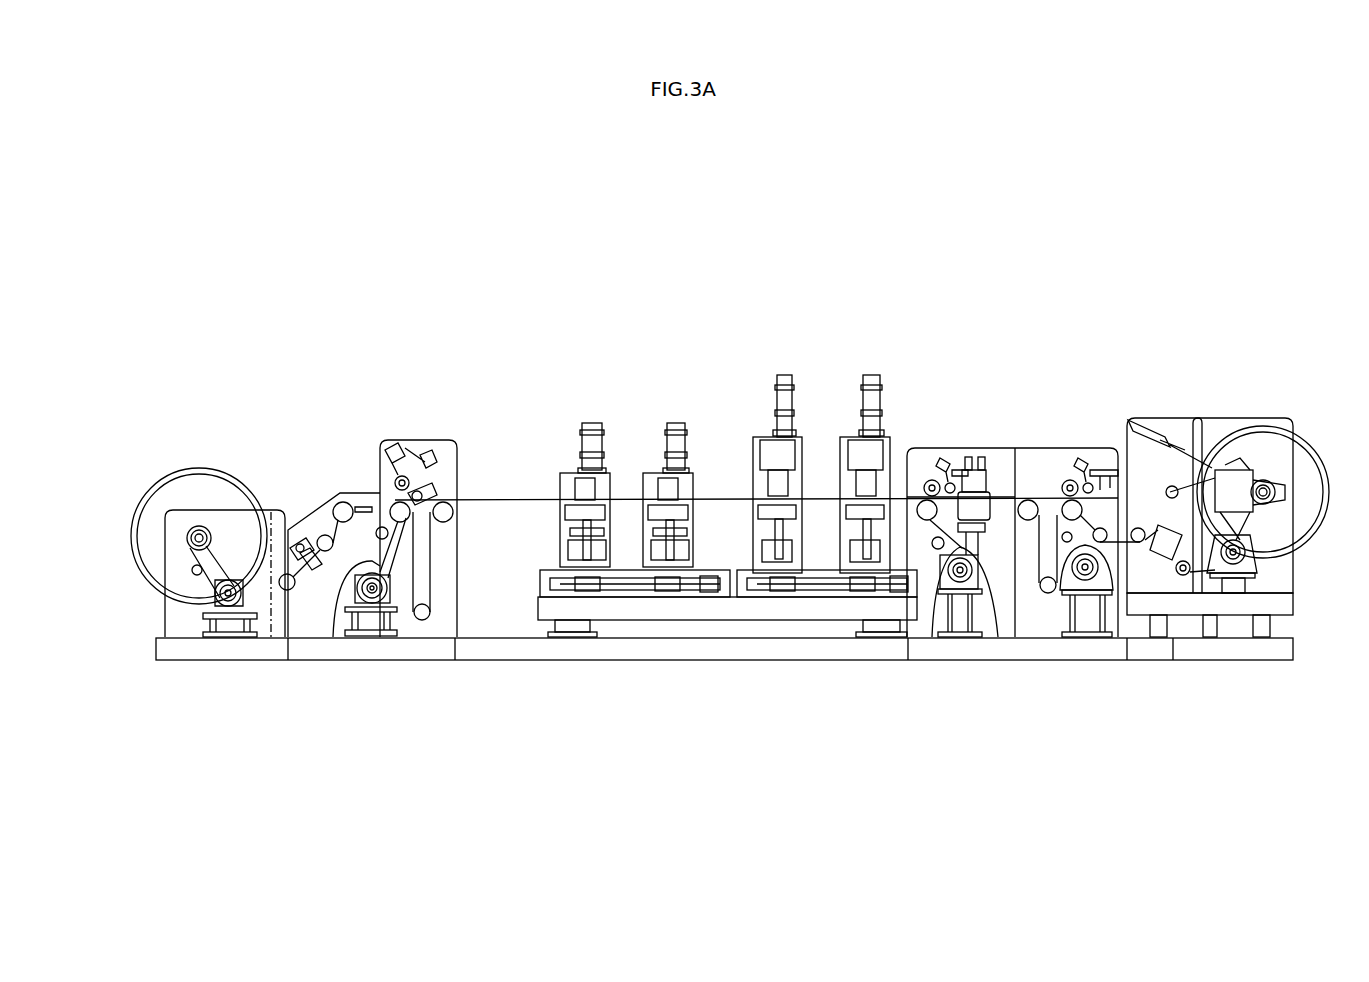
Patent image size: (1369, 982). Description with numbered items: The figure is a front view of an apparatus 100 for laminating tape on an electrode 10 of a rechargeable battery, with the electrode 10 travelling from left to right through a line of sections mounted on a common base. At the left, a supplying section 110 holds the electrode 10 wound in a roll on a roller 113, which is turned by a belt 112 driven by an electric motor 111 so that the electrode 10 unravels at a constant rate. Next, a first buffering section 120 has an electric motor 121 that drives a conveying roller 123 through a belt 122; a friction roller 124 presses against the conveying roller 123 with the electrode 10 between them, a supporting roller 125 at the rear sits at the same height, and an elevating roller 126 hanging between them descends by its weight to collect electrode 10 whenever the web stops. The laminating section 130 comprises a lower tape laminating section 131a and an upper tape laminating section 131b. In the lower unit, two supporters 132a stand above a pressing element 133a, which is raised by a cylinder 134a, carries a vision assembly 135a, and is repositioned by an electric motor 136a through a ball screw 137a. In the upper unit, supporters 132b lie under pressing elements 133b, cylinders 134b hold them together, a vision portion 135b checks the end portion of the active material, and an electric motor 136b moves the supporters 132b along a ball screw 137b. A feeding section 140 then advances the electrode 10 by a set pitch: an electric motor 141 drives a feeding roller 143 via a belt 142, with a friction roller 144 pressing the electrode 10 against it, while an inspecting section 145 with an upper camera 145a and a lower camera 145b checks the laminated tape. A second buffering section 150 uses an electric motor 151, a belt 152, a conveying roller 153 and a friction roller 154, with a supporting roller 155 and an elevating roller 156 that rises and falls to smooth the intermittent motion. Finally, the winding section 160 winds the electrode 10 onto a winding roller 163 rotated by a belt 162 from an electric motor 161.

The apparatus for laminating tape on an electrode 100 is at (987, 210).
The electrode 10 is at (170, 482).
The supplying section 110 is at (195, 437).
The electric motor 111 is at (230, 612).
The belt 112 is at (270, 587).
The roller 113 is at (183, 538).
The first buffering section 120 is at (387, 415).
The electric motor 121 is at (373, 612).
The belt 122 is at (336, 645).
The conveying roller 123 is at (385, 490).
The friction roller 124 is at (433, 490).
The supporting roller 125 is at (447, 508).
The elevating roller 126 is at (421, 620).
The laminating section 130 is at (710, 337).
The lower tape laminating section 131a is at (587, 397).
The upper tape laminating section 131b is at (788, 322).
The supporters 132a is at (570, 480).
The supporters 132b is at (820, 545).
The pressing element 133a is at (621, 570).
The pressing elements 133b is at (803, 435).
The cylinder 134a is at (567, 590).
The cylinders 134b is at (773, 462).
The vision assembly 135a is at (612, 563).
The vision portion 135b is at (810, 497).
The electric motor 136a is at (710, 600).
The electric motor 136b is at (902, 580).
The ball screw 137a is at (695, 600).
The ball screw 137b is at (857, 587).
The feeding section 140 is at (957, 337).
The electric motor 141 is at (962, 592).
The belt 142 is at (937, 553).
The feeding roller 143 is at (906, 495).
The friction roller 144 is at (924, 500).
The inspecting section 145 is at (997, 480).
The upper camera 145a is at (975, 470).
The lower camera 145b is at (1000, 540).
The second buffering section 150 is at (1073, 337).
The electric motor 151 is at (1085, 595).
The belt 152 is at (1110, 596).
The conveying roller 153 is at (1100, 465).
The friction roller 154 is at (1070, 483).
The supporting roller 155 is at (1030, 505).
The elevating roller 156 is at (1048, 594).
The winding section 160 is at (1202, 337).
The electric motor 161 is at (1225, 578).
The belt 162 is at (1250, 552).
The winding roller 163 is at (1273, 478).